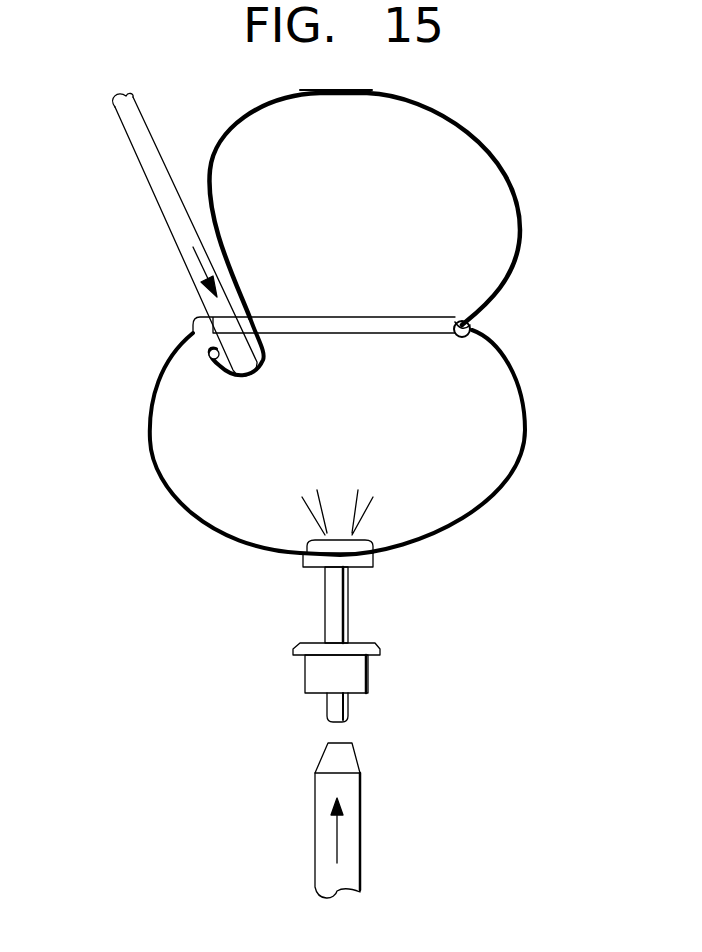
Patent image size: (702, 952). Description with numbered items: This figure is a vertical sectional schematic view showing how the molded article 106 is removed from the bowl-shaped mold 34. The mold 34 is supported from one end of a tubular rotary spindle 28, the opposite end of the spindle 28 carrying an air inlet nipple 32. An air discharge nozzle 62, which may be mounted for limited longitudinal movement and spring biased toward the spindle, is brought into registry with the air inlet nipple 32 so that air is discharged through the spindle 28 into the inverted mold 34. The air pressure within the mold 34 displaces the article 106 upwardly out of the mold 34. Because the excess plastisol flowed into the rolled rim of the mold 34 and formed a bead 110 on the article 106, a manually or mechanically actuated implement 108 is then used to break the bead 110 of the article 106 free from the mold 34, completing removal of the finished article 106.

The article 106 is at (500, 157).
The implement 108 is at (137, 150).
The bead 110 is at (208, 358).
The mold 34 is at (220, 530).
The rotary spindle 28 is at (347, 612).
The air inlet nipple 32 is at (350, 707).
The air discharge nozzle 62 is at (322, 810).